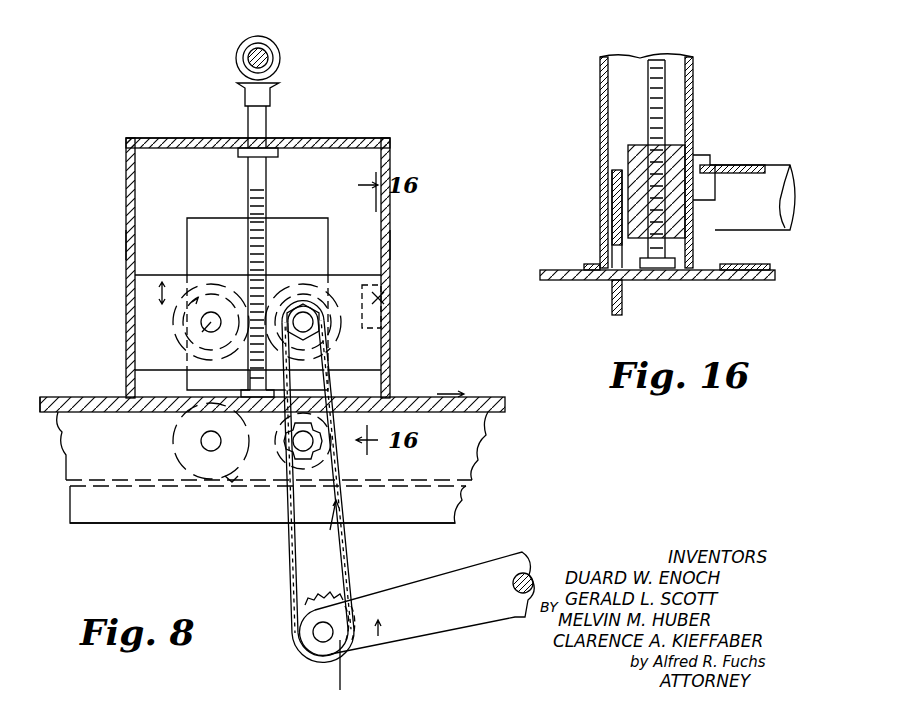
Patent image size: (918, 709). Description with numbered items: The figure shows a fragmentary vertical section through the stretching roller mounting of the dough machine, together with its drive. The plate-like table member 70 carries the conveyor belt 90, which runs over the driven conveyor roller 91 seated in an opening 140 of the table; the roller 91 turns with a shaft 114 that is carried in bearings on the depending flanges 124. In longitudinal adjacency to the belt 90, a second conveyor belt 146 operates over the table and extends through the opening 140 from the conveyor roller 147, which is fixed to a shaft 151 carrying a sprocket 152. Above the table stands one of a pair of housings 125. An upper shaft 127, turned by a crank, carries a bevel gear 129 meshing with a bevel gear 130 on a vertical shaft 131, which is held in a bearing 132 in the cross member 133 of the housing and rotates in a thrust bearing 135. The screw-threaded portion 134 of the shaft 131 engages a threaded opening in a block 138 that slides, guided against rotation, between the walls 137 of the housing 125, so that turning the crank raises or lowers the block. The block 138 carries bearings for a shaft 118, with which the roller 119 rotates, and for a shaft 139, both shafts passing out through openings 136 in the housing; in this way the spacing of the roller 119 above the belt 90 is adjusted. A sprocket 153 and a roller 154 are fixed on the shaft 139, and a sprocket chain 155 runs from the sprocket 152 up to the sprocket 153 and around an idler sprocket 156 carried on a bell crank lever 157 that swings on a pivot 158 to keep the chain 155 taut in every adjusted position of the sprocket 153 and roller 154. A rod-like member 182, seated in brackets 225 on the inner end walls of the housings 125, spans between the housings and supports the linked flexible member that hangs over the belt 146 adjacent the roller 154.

In FIG. 8, the table member 70 is at (62, 432).
In FIG. 16, the table member 70 is at (748, 282).
In FIG. 8, the belt 90 is at (92, 397).
In FIG. 8, the conveyor roller 91 is at (214, 484).
In FIG. 8, the shaft 114 is at (200, 441).
In FIG. 8, the shaft 118 is at (208, 324).
In FIG. 8, the roller 119 is at (178, 318).
In FIG. 8, the depending flange 124 is at (118, 525).
In FIG. 8, the housing 125 is at (126, 165).
In FIG. 16, the housing 125 is at (600, 80).
In FIG. 8, the shaft 127 is at (250, 50).
In FIG. 8, the bevel gear 129 is at (240, 60).
In FIG. 8, the bevel gear 130 is at (245, 97).
In FIG. 8, the shaft 131 is at (248, 118).
In FIG. 8, the bearing 132 is at (238, 153).
In FIG. 8, the cross member 133 is at (338, 146).
In FIG. 8, the screw-threaded portion 134 is at (248, 200).
In FIG. 16, the screw-threaded portion 134 is at (665, 85).
In FIG. 8, the thrust bearing 135 is at (248, 388).
In FIG. 16, the thrust bearing 135 is at (660, 270).
In FIG. 8, the opening 136 is at (200, 240).
In FIG. 8, the wall 137 is at (126, 240).
In FIG. 16, the wall 137 is at (625, 62).
In FIG. 8, the block 138 is at (135, 285).
In FIG. 16, the block 138 is at (628, 148).
In FIG. 8, the shaft 139 is at (303, 312).
In FIG. 16, the shaft 139 is at (612, 186).
In FIG. 8, the opening 140 is at (352, 395).
In FIG. 8, the conveyor belt 146 is at (480, 397).
In FIG. 16, the conveyor belt 146 is at (770, 264).
In FIG. 8, the conveyor roller 147 is at (284, 470).
In FIG. 8, the shaft 151 is at (300, 478).
In FIG. 8, the sprocket 152 is at (317, 456).
In FIG. 8, the sprocket 153 is at (330, 352).
In FIG. 16, the sprocket 153 is at (612, 212).
In FIG. 8, the roller 154 is at (333, 352).
In FIG. 16, the roller 154 is at (762, 165).
In FIG. 8, the sprocket chain 155 is at (294, 586).
In FIG. 16, the sprocket chain 155 is at (612, 296).
In FIG. 8, the idler sprocket 156 is at (340, 600).
In FIG. 8, the bell crank lever 157 is at (420, 638).
In FIG. 8, the pivot 158 is at (526, 578).
In FIG. 8, the rod-like member 182 is at (385, 292).
In FIG. 16, the rod-like member 182 is at (737, 166).
In FIG. 8, the bracket 225 is at (382, 318).
In FIG. 16, the bracket 225 is at (703, 156).